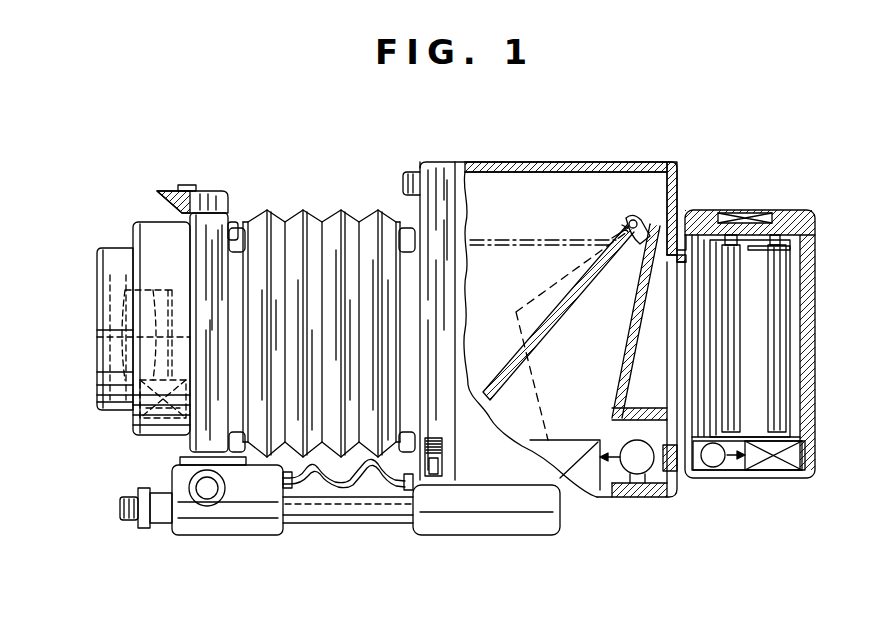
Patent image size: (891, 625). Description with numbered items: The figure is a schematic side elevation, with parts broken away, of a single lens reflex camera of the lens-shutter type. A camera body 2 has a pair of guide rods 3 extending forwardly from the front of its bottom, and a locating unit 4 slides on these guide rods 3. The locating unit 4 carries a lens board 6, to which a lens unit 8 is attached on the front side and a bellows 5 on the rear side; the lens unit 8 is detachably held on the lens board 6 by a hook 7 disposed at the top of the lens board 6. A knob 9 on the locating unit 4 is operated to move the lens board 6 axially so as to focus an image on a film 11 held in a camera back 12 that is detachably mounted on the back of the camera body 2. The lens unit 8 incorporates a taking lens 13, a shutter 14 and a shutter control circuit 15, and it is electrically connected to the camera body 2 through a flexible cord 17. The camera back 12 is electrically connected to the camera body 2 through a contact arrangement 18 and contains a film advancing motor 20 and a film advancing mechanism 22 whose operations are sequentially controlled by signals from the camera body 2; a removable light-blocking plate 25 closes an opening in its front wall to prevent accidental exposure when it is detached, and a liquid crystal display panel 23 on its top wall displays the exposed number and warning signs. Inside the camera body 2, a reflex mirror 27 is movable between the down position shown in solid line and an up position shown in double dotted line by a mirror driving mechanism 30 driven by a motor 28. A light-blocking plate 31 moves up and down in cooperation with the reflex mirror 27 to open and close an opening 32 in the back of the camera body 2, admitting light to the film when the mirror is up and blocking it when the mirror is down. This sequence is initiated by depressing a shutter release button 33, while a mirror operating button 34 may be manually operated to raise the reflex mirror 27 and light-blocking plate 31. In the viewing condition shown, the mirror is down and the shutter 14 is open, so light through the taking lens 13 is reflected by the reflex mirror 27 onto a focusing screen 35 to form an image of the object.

The camera body 2 is at (447, 176).
The guide rods 3 is at (390, 523).
The locating unit 4 is at (165, 470).
The bellows 5 is at (358, 224).
The lens board 6 is at (205, 266).
The hook 7 is at (216, 193).
The lens unit 8 is at (120, 218).
The knob 9 is at (207, 506).
The film 11 is at (708, 368).
The camera back 12 is at (814, 210).
The taking lens 13 is at (118, 337).
The shutter 14 is at (140, 282).
The shutter control circuit 15 is at (140, 412).
The flexible cord 17 is at (338, 488).
The contact arrangement 18 is at (660, 470).
The film advancing motor 20 is at (713, 470).
The film advancing mechanism 22 is at (775, 470).
The liquid crystal display panel 23 is at (742, 211).
The light-blocking plate 25 is at (692, 338).
The reflex mirror 27 is at (494, 398).
The motor 28 is at (620, 476).
The mirror driving mechanism 30 is at (576, 439).
The light-blocking plate 31 is at (616, 362).
The opening 32 is at (666, 264).
The shutter release button 33 is at (405, 183).
The mirror operating button 34 is at (434, 475).
The focusing screen 35 is at (560, 164).